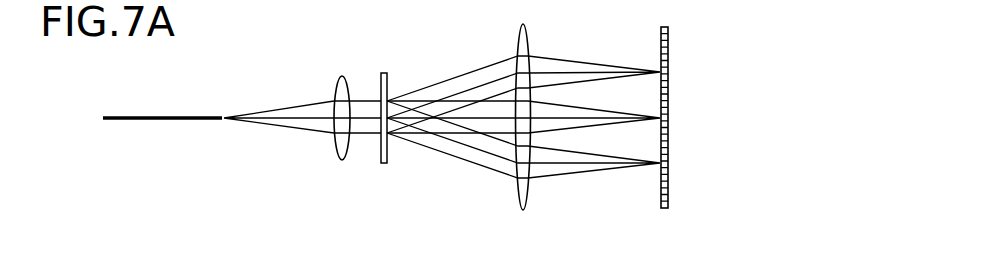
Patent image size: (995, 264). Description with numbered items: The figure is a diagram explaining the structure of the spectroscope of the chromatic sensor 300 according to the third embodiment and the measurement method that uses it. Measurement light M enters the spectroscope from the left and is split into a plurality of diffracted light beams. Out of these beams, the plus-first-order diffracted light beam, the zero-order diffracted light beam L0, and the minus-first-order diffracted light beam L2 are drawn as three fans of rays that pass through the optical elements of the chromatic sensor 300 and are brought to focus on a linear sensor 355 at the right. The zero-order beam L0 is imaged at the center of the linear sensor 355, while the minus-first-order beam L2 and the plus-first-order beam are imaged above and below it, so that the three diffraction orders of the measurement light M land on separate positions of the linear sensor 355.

The measurement light M is at (272, 113).
The chromatic sensor 300 is at (423, 60).
The 0-order diffracted light beam L0 is at (612, 123).
The −1-order diffracted light beam L2 is at (583, 175).
The linear sensor 355 is at (668, 91).